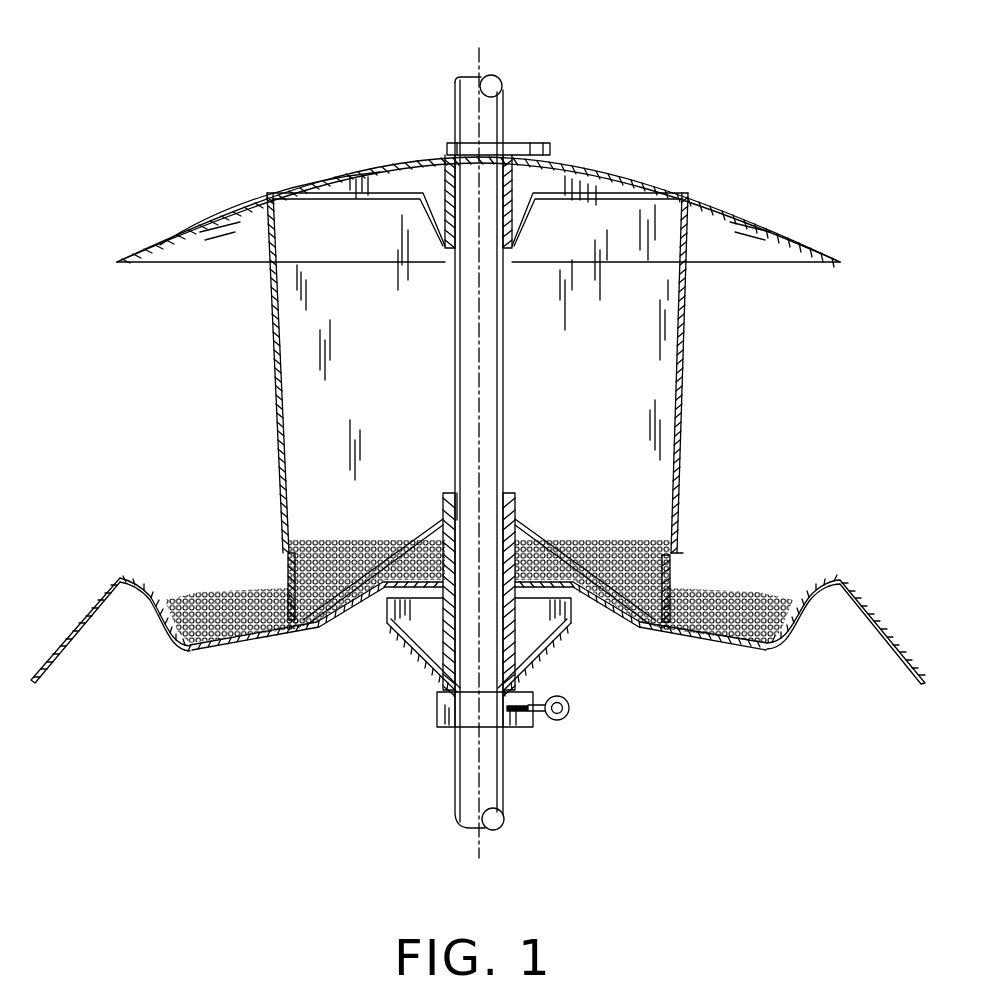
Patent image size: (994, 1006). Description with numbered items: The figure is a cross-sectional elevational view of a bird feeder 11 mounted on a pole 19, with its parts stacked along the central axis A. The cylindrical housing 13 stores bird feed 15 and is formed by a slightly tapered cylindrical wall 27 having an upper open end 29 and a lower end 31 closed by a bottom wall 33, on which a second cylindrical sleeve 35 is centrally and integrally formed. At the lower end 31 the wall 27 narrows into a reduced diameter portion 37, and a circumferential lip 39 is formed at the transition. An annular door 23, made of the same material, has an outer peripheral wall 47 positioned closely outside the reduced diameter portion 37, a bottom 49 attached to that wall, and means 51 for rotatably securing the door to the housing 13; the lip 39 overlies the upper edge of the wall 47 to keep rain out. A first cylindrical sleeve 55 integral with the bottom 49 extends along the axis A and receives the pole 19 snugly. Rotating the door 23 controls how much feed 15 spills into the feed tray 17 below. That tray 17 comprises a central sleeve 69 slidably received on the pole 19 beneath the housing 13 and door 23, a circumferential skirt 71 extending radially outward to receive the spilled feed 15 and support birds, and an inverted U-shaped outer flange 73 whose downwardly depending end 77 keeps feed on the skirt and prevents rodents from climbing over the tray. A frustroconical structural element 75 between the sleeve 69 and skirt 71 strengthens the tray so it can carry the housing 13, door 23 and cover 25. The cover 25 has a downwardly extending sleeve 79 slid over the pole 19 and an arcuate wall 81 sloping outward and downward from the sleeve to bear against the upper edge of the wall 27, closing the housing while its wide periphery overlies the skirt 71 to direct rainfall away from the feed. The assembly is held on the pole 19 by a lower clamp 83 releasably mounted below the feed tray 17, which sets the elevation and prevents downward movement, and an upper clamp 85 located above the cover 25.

The bird feeder 11 is at (220, 114).
The cylindrical housing 13 is at (495, 373).
The bird feed 15 is at (446, 527).
The feed tray 17 is at (478, 640).
The pole 19 is at (466, 770).
The annular door 23 is at (284, 566).
The cover 25 is at (478, 176).
The cylindrical wall 27 is at (268, 300).
The upper open end 29 is at (691, 290).
The lower end 31 is at (284, 545).
The bottom wall 33 is at (441, 511).
The cylindrical sleeve (second sleeve) 35 is at (516, 509).
The reduced diameter portion 37 is at (646, 540).
The circumferential lip 39 is at (680, 556).
The outer peripheral wall 47 is at (672, 578).
The bottom 49 is at (620, 622).
The means for rotatably securing the door 51 is at (423, 667).
The cylindrical sleeve (first sleeve) 55 is at (456, 492).
The sleeve 69 is at (512, 650).
The circumferential skirt 71 is at (282, 643).
The outer flange 73 is at (110, 640).
The frustroconical-shaped structural element 75 is at (439, 616).
The downwardly depending end 77 is at (39, 688).
The sleeve 79 is at (446, 200).
The arcuate wall 81 is at (345, 178).
The lower clamp 83 is at (536, 733).
The upper clamp 85 is at (546, 141).
The axis A is at (476, 67).